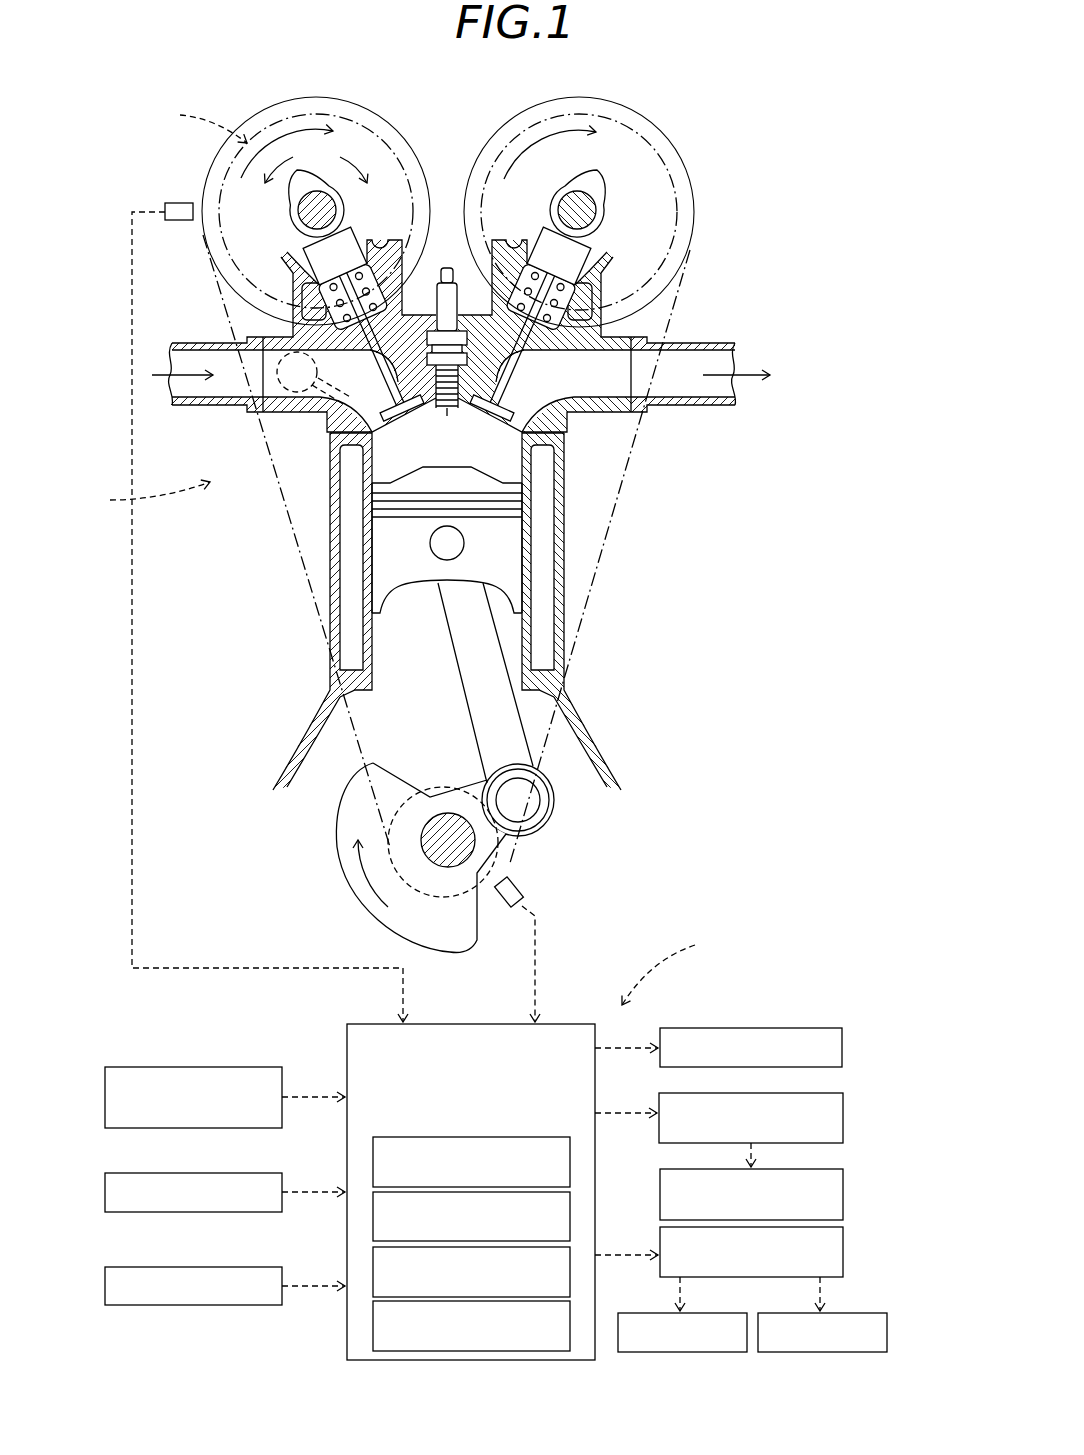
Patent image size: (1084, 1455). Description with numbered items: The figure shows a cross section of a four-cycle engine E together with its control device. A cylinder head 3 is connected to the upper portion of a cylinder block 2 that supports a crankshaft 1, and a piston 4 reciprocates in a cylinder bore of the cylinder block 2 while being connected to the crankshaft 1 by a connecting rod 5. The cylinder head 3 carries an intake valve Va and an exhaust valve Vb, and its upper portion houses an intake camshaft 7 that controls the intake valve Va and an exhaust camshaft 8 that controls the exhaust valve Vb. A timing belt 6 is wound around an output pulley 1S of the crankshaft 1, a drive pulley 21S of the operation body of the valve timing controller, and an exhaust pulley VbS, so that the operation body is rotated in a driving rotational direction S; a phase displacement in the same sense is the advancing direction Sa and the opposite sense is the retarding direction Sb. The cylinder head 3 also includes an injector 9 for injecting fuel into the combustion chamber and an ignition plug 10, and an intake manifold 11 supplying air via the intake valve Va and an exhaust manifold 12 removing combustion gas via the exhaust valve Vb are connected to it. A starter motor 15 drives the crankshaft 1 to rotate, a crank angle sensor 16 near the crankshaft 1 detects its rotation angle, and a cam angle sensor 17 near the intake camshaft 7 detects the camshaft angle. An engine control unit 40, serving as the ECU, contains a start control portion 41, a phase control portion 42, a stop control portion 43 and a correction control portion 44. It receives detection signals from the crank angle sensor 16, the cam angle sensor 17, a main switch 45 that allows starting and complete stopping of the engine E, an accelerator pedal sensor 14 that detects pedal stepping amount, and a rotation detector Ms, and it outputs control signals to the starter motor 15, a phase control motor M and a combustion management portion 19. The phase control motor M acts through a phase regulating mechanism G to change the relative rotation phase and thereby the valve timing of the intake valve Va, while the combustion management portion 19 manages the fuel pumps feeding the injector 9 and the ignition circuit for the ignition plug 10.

The crankshaft 1 is at (447, 813).
The cylinder block 2 is at (563, 580).
The cylinder head 3 is at (567, 418).
The piston 4 is at (512, 533).
The connecting rod 5 is at (457, 637).
The timing belt 6 is at (293, 547).
The intake camshaft 7 is at (300, 224).
The exhaust camshaft 8 is at (595, 188).
The injector 9 is at (318, 400).
The ignition plug 10 is at (448, 263).
The intake manifold 11 is at (210, 342).
The exhaust manifold 12 is at (693, 343).
The accelerator pedal sensor 14 is at (207, 1065).
The starter motor 15 is at (845, 1048).
The crank angle sensor 16 is at (519, 878).
The cam angle sensor 17 is at (177, 202).
The combustion management portion 19 is at (845, 1250).
The engine control unit 40 is at (347, 1058).
The start control portion 41 is at (373, 1162).
The phase control portion 42 is at (373, 1213).
The stop control portion 43 is at (373, 1270).
The correction control portion 44 is at (373, 1323).
The main switch 45 is at (190, 1172).
The phase control motor M is at (845, 1113).
The phase regulating mechanism G is at (845, 1190).
The rotation detector Ms is at (190, 1307).
The driving rotational direction S is at (283, 137).
The advancing direction Sa is at (364, 187).
The retarding direction Sb is at (266, 187).
The output pulley 1S is at (423, 900).
The drive pulley 21S is at (397, 130).
The exhaust pulley VbS is at (500, 130).
The intake valve Va is at (410, 412).
The exhaust valve Vb is at (498, 400).
The engine E is at (148, 501).